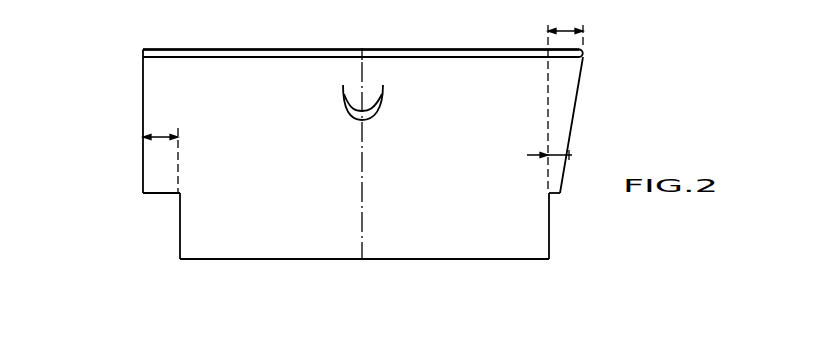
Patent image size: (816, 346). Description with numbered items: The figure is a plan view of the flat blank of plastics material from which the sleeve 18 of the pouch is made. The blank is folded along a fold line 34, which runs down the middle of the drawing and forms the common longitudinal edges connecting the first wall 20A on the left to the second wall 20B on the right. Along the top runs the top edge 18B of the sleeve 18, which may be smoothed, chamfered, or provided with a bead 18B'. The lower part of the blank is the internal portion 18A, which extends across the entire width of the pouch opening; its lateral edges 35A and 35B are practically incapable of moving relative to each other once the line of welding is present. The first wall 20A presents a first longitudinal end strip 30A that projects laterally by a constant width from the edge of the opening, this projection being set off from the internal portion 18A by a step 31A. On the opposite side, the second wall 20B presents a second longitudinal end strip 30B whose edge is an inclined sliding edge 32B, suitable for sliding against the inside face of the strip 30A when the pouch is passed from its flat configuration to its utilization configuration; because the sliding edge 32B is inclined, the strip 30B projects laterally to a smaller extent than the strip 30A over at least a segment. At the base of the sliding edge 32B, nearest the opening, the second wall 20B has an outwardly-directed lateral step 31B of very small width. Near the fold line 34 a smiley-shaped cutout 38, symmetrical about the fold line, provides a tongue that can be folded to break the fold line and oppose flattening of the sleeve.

The sleeve 18 is at (96, 94).
The internal portion of the sleeve 18A is at (292, 259).
The top edge of the sleeve 18B is at (361, 30).
The bead 18B' is at (361, 33).
The first wall 20A is at (261, 145).
The second wall 20B is at (481, 145).
The first longitudinal end strip 30A is at (154, 65).
The second longitudinal end strip 30B is at (568, 62).
The step 31A is at (160, 195).
The outwardly-directed lateral step 31B is at (551, 195).
The sliding edge 32B is at (575, 119).
The fold line 34 is at (364, 57).
The edge of the internal portion 35A is at (179, 233).
The edge of the internal portion 35B is at (549, 243).
The cutout 38 is at (356, 117).